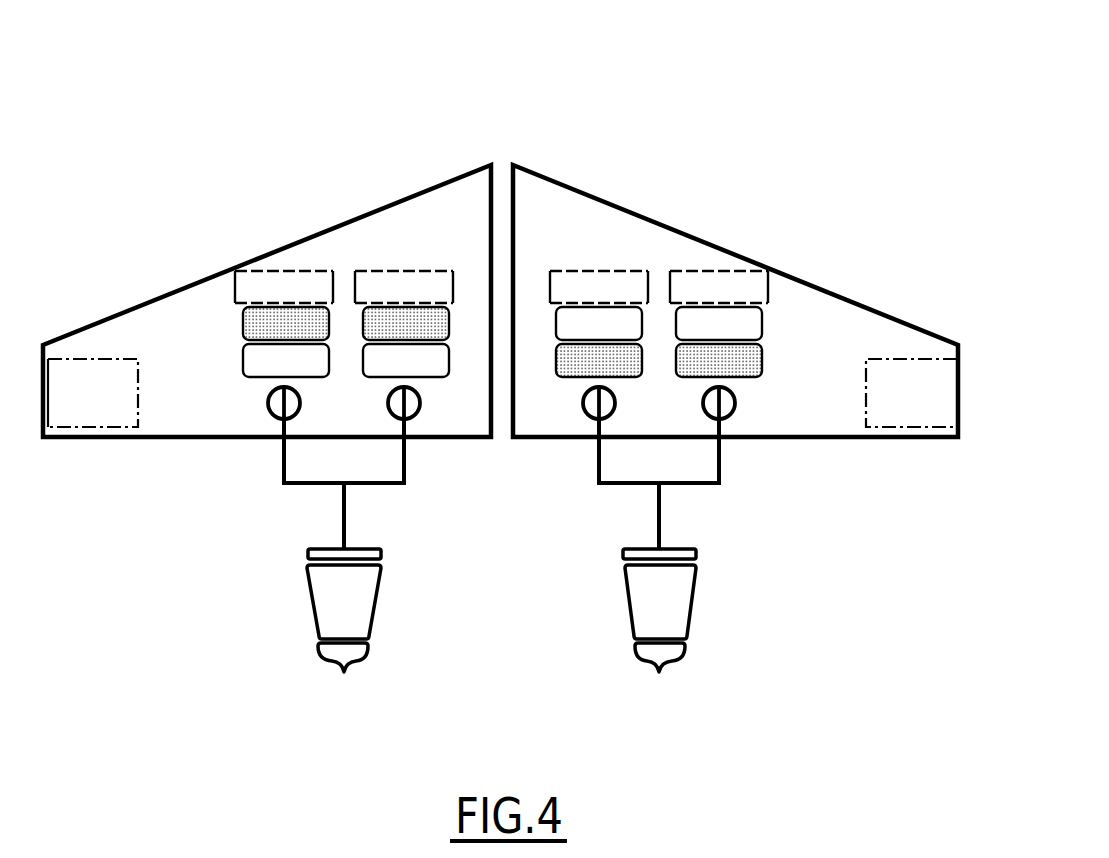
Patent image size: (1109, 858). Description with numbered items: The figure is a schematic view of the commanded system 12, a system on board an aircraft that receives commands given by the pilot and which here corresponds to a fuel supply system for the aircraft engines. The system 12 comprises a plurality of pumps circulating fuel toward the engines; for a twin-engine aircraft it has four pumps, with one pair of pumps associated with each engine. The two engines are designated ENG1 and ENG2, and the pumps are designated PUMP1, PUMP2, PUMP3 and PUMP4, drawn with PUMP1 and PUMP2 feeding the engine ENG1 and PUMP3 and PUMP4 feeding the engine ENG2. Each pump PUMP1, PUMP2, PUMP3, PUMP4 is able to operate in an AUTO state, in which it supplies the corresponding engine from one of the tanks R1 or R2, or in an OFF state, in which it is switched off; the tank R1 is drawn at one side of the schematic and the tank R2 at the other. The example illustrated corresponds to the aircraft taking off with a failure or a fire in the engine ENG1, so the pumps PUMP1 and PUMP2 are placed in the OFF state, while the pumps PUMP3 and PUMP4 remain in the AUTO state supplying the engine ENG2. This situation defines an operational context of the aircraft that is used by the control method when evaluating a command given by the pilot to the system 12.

The commanded system 12 is at (500, 366).
The tank R1 is at (93, 393).
The tank R2 is at (911, 393).
The pump PUMP1 is at (284, 345).
The pump PUMP2 is at (404, 345).
The pump PUMP3 is at (599, 345).
The pump PUMP4 is at (719, 345).
The engine ENG1 is at (344, 628).
The engine ENG2 is at (659, 610).